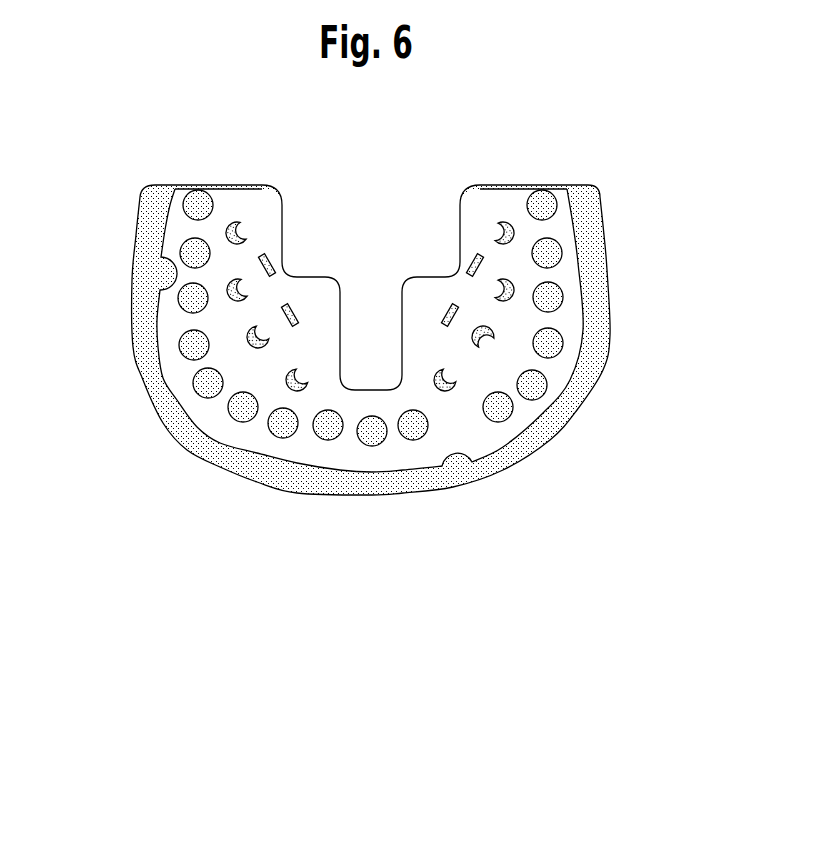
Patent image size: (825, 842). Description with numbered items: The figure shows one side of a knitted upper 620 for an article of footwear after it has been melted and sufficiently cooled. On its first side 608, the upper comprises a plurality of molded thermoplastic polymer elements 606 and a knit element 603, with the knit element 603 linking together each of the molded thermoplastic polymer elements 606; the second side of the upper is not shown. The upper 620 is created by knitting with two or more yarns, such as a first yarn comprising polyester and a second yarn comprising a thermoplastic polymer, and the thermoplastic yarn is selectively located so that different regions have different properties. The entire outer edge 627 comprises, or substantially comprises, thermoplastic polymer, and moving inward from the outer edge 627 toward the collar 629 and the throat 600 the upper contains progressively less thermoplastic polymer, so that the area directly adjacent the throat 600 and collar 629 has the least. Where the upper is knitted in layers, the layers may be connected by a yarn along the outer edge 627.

The throat 600 is at (323, 343).
The knit element 603 is at (218, 240).
The molded thermoplastic polymer elements 606 is at (547, 200).
The first side 608 is at (366, 360).
The upper 620 is at (650, 191).
The outer edge 627 is at (612, 287).
The collar 629 is at (282, 233).